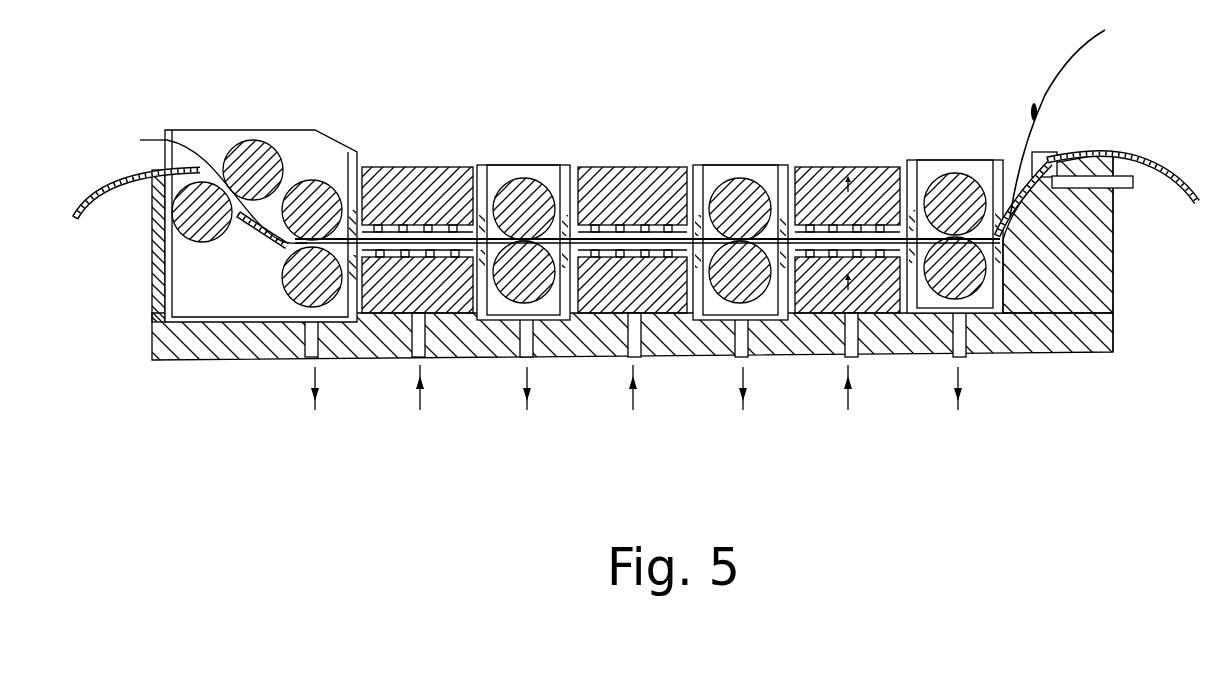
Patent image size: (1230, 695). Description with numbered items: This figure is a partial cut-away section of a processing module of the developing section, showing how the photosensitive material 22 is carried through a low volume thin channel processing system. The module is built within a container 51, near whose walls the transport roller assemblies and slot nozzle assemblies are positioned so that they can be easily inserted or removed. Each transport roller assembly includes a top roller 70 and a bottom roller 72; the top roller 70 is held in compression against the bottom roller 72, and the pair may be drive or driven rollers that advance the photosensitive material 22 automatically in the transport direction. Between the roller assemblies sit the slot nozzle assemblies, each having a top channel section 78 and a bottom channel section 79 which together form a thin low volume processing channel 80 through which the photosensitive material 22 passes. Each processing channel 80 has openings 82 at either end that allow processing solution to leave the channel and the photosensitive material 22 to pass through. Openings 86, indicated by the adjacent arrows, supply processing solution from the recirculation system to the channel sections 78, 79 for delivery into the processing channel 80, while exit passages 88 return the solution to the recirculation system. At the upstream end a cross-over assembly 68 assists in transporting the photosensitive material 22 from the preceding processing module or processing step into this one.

The photosensitive material 22 is at (1077, 43).
The container 51 is at (158, 365).
The cross-over assembly 68 is at (186, 124).
The top roller 70 is at (525, 200).
The bottom roller 72 is at (530, 230).
The top channel section 78 is at (414, 167).
The bottom channel section 79 is at (402, 297).
The processing channel 80 is at (390, 232).
The openings 82 is at (372, 258).
The openings 86 is at (437, 362).
The exit passages 88 is at (270, 360).